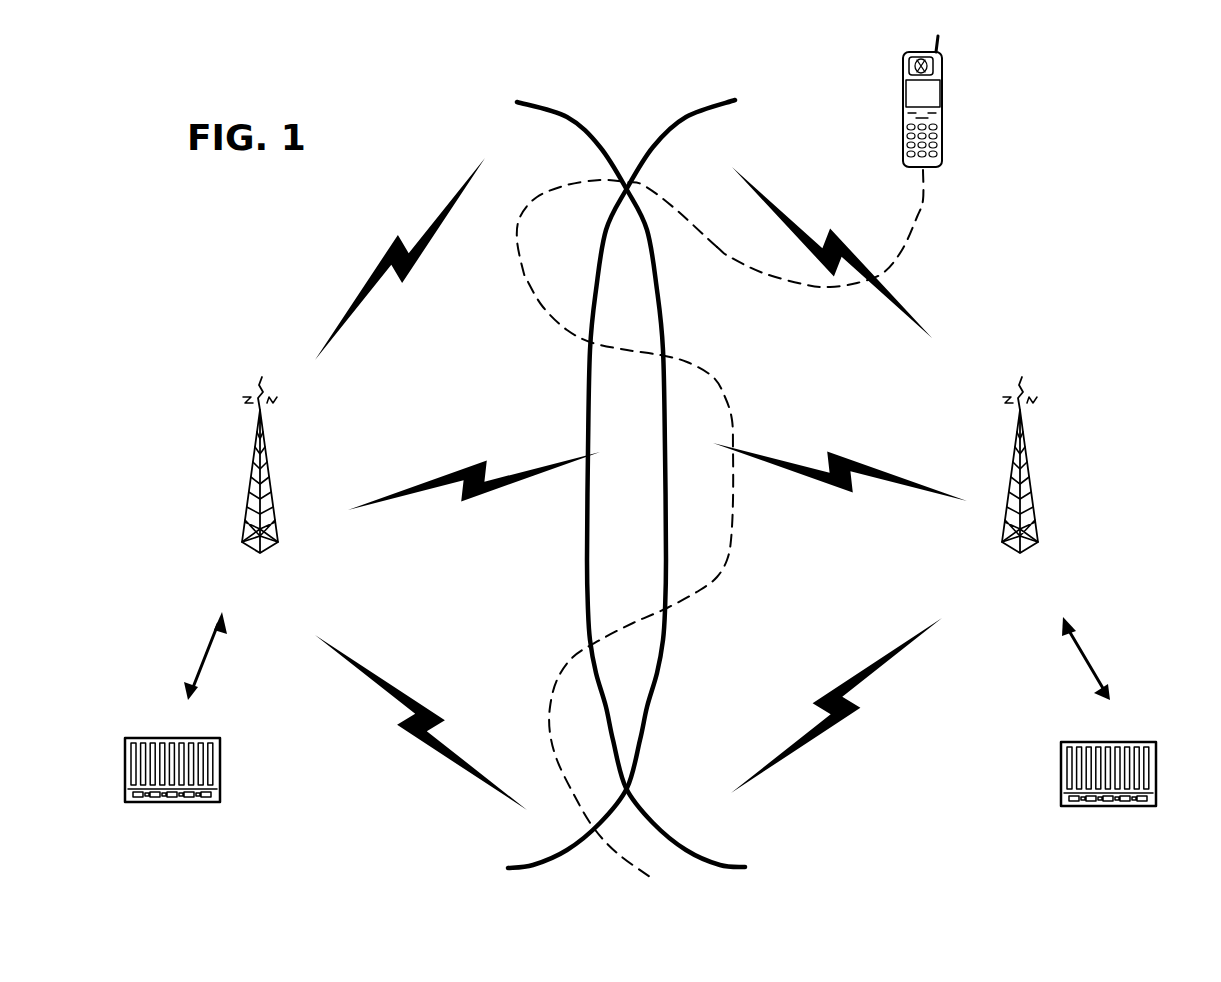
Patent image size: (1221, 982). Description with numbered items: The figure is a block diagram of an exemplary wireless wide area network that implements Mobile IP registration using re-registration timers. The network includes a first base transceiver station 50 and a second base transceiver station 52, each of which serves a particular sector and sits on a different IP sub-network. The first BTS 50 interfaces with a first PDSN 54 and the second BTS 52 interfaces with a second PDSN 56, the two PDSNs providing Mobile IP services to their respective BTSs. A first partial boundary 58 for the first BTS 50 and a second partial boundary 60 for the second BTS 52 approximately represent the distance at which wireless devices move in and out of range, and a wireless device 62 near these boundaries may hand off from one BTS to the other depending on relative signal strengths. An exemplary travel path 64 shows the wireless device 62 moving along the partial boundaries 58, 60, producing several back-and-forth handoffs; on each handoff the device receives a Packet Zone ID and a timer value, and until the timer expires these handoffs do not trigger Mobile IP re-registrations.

The first base transceiver station 50 is at (252, 460).
The second base transceiver station 52 is at (1012, 460).
The first PDSN 54 is at (220, 755).
The second PDSN 56 is at (1155, 758).
The first partial boundary 58 is at (572, 117).
The second partial boundary 60 is at (680, 117).
The wireless device 62 is at (902, 98).
The travel path 64 is at (725, 393).